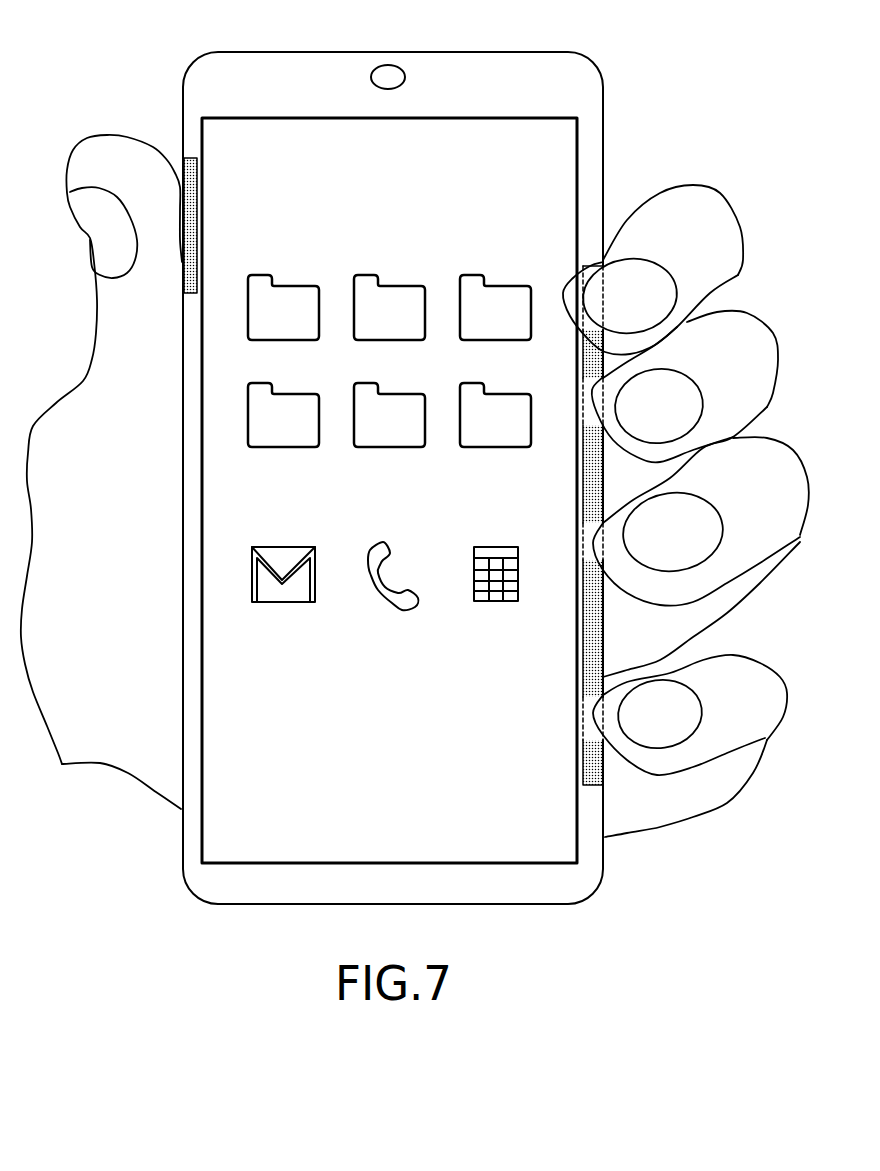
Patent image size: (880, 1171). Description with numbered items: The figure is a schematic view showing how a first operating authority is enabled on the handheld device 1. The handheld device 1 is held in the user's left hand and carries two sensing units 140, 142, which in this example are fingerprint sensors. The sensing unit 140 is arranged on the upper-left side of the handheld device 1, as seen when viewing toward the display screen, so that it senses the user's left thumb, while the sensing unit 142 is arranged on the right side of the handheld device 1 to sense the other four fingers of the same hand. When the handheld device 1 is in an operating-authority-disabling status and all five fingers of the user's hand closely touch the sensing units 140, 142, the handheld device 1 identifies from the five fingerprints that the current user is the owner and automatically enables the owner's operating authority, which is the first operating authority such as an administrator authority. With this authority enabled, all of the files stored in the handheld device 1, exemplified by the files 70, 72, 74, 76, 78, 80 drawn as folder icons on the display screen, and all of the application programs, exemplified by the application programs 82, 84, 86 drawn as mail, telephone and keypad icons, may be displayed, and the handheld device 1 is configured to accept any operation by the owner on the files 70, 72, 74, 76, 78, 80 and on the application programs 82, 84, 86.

The handheld device 1 is at (502, 58).
The sensing unit 140 is at (192, 210).
The sensing unit 142 is at (592, 677).
The file 70 is at (295, 292).
The file 72 is at (401, 292).
The file 74 is at (507, 292).
The file 76 is at (295, 400).
The file 78 is at (401, 400).
The file 80 is at (507, 400).
The application program 82 is at (283, 553).
The application program 84 is at (383, 540).
The application program 86 is at (497, 552).